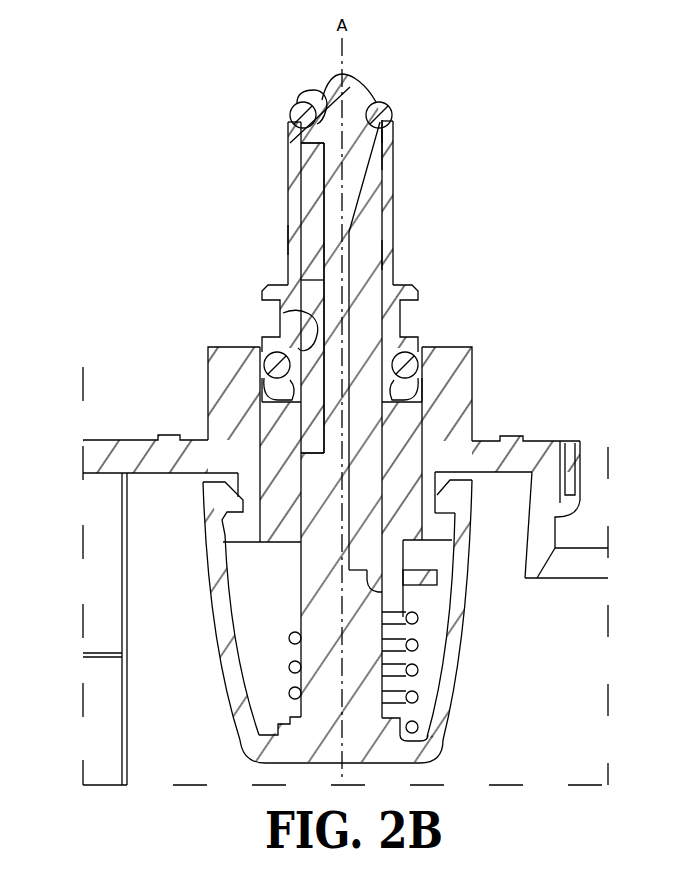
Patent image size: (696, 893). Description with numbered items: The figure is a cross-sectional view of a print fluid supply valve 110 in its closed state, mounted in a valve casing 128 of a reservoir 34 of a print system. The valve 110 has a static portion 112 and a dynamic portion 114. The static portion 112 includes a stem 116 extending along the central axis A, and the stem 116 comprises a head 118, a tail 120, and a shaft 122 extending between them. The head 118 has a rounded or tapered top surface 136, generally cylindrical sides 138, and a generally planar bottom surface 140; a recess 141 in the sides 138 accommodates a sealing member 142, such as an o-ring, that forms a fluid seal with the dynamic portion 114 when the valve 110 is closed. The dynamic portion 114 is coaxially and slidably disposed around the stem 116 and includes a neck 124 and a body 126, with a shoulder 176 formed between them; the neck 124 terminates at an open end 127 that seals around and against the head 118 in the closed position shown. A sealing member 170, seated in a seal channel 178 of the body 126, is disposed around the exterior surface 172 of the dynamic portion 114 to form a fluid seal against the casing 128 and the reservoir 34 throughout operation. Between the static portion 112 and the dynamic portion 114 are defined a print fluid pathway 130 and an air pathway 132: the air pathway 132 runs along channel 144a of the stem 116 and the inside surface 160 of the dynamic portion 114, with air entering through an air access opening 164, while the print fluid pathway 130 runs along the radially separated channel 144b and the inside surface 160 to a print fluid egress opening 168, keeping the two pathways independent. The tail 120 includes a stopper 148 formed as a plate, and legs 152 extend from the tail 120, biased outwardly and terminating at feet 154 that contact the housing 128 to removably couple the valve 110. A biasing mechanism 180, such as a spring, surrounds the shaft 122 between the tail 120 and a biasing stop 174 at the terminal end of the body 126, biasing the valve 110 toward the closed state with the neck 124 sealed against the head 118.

The print fluid supply valve 110 is at (133, 120).
The static portion 112 is at (360, 100).
The dynamic portion 114 is at (286, 211).
The stem 116 is at (354, 240).
The head 118 is at (356, 100).
The tail 120 is at (383, 750).
The shaft 122 is at (347, 440).
The neck 124 is at (388, 192).
The body 126 is at (403, 507).
The open end 127 is at (385, 117).
The valve casing 128 is at (232, 447).
The print fluid pathway 130 is at (357, 287).
The air pathway 132 is at (313, 297).
The top surface 136 is at (320, 80).
The sides 138 is at (384, 147).
The bottom surface 140 is at (308, 158).
The recess 141 is at (303, 94).
The sealing member 142 is at (292, 112).
The channel 144a is at (288, 238).
The channel 144b is at (370, 255).
The stopper 148 is at (300, 742).
The legs 152 is at (222, 622).
The feet 154 is at (223, 502).
The inside surface 160 is at (283, 313).
The air access opening 164 is at (315, 450).
The print fluid egress opening 168 is at (437, 575).
The sealing member 170 is at (423, 362).
The exterior surface 172 is at (407, 443).
The biasing stop 174 is at (403, 593).
The shoulder 176 is at (413, 290).
The seal channel 178 is at (263, 390).
The biasing mechanism 180 is at (390, 645).
The reservoir 34 is at (503, 714).